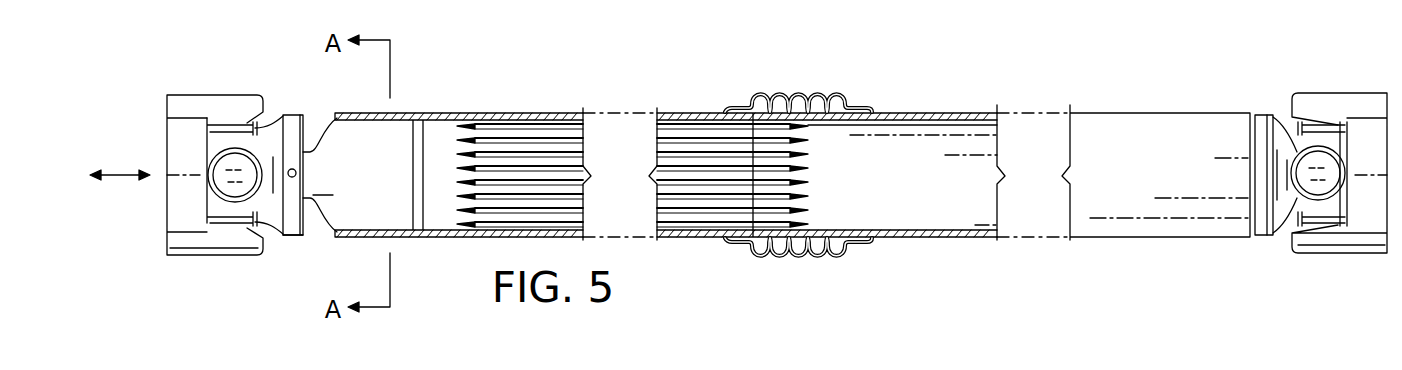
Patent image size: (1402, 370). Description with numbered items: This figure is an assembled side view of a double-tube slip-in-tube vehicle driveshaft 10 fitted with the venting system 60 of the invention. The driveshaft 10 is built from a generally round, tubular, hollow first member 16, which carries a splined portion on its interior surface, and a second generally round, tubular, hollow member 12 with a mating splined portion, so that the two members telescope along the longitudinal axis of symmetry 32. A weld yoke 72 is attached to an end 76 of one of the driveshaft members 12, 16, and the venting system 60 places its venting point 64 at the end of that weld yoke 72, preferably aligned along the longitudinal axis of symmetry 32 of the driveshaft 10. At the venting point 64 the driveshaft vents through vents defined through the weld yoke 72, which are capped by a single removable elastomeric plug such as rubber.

The vehicle driveshaft 10 is at (814, 61).
The second member 12 is at (952, 113).
The first member 16 is at (497, 113).
The longitudinal axis of symmetry 32 is at (123, 175).
The venting system 60 is at (305, 131).
The venting point 64 is at (304, 173).
The weld yoke 72 is at (290, 115).
The end of driveshaft member 76 is at (290, 236).